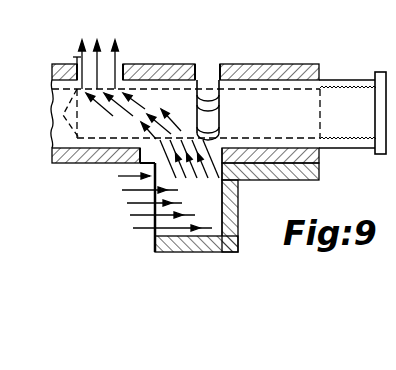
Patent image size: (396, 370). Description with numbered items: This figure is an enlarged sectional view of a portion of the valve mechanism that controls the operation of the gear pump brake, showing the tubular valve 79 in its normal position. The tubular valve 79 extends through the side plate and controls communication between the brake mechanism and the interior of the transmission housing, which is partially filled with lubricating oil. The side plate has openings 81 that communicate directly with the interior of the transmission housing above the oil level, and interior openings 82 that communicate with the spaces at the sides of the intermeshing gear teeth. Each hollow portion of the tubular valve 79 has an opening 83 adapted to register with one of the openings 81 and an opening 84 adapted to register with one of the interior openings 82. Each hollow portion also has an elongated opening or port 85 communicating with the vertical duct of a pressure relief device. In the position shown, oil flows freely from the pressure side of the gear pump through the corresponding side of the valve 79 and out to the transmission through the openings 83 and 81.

The tubular valve 79 is at (342, 81).
The openings 81 is at (103, 67).
The interior openings 82 is at (167, 164).
The opening 83 is at (50, 92).
The opening 84 is at (133, 150).
The elongated opening or port 85 is at (207, 84).